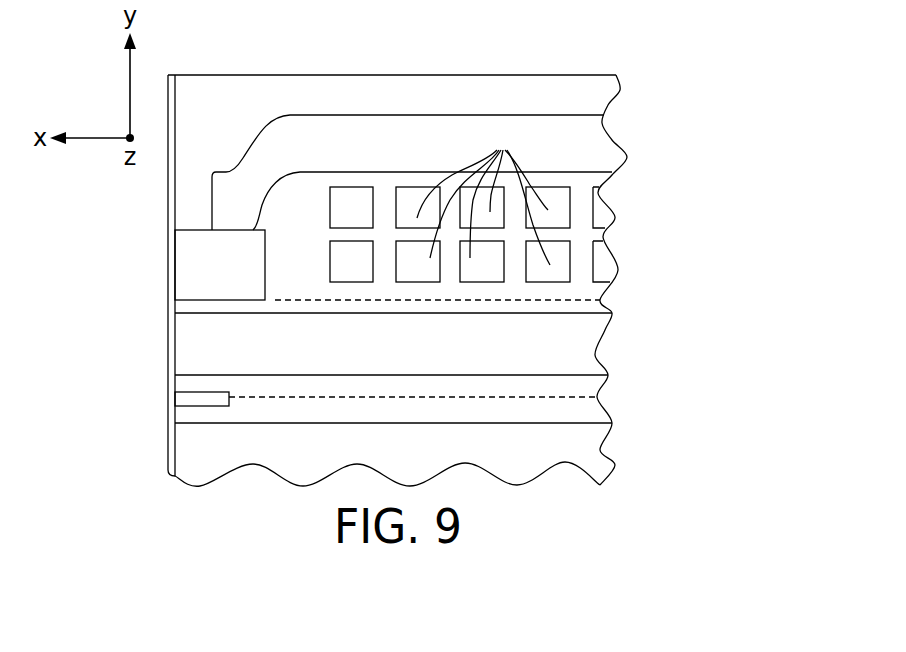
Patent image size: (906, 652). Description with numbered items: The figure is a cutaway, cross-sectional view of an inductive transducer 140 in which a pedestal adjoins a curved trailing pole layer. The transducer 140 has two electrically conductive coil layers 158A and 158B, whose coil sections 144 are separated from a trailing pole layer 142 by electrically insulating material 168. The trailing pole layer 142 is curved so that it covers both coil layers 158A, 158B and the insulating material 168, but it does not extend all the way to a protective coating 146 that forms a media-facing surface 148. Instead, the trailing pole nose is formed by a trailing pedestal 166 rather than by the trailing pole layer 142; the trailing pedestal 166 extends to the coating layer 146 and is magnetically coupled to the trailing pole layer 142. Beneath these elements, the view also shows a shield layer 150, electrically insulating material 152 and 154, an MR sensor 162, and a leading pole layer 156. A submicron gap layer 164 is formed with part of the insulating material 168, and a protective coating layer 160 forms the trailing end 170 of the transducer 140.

The transducer 140 is at (616, 38).
The trailing end 170 is at (384, 64).
The protective coating layer 160 is at (600, 103).
The trailing pole layer 142 is at (600, 150).
The electrically insulating material 168 is at (296, 232).
The electrically conductive coil layer 158B is at (622, 204).
The electrically conductive coil layer 158A is at (630, 257).
The coil sections 144 is at (483, 193).
The trailing pedestal 166 is at (195, 261).
The submicron gap layer 164 is at (600, 308).
The leading pole layer 156 is at (590, 355).
The electrically insulating material 154 is at (596, 393).
The electrically insulating material 152 is at (606, 420).
The shield layer 150 is at (604, 451).
The MR sensor 162 is at (186, 398).
The media-facing surface 148 is at (160, 420).
The protective coating 146 is at (171, 456).